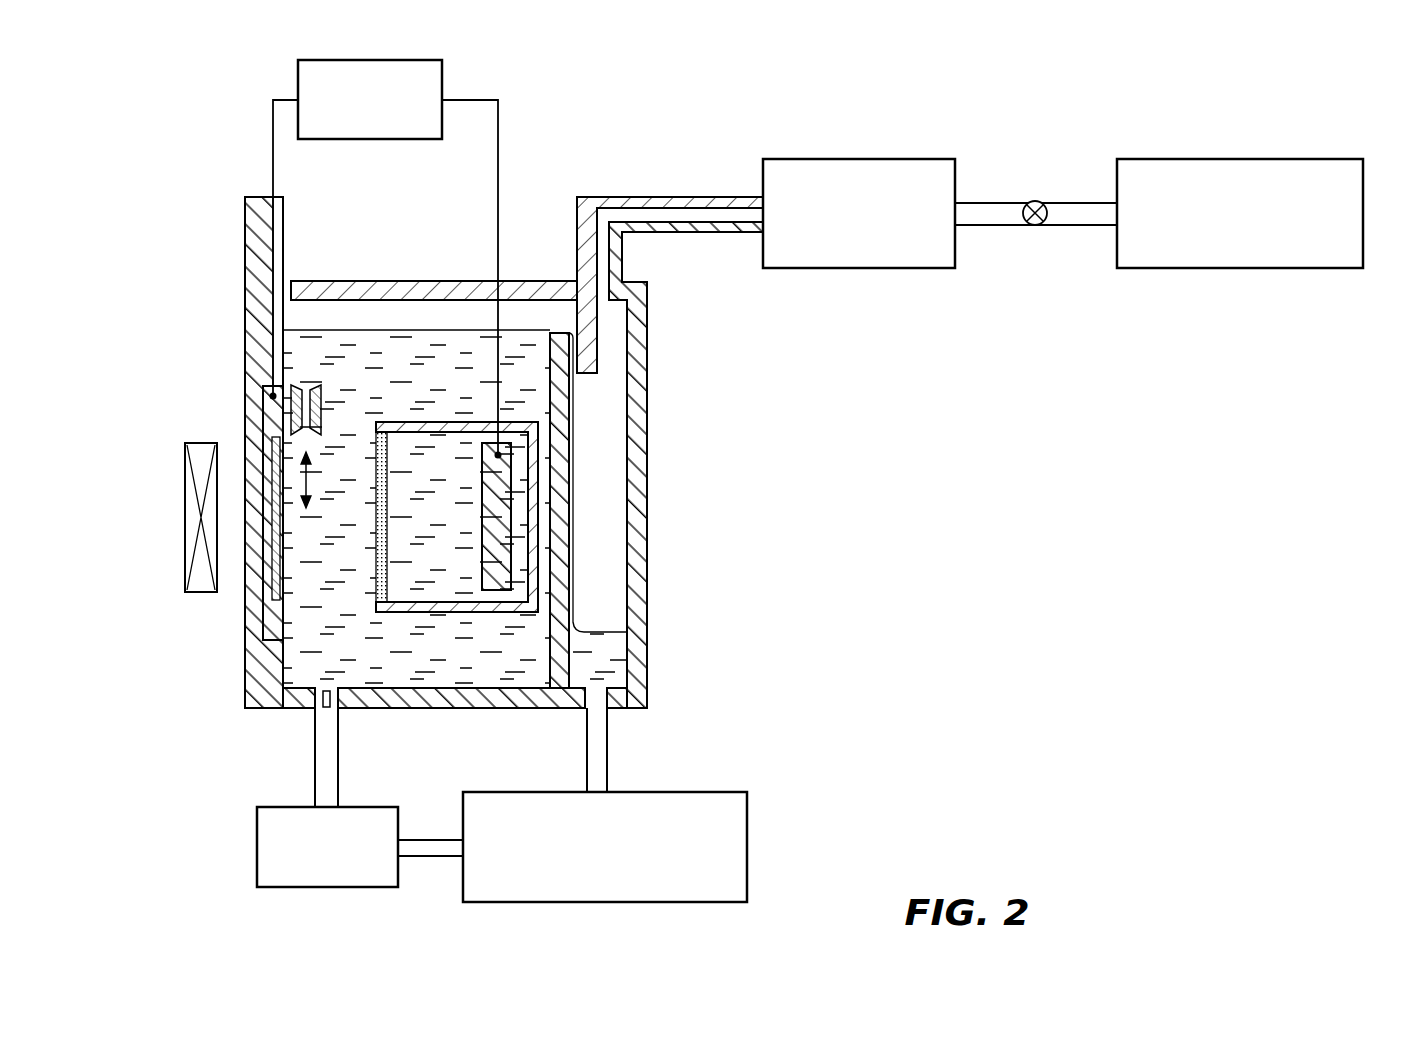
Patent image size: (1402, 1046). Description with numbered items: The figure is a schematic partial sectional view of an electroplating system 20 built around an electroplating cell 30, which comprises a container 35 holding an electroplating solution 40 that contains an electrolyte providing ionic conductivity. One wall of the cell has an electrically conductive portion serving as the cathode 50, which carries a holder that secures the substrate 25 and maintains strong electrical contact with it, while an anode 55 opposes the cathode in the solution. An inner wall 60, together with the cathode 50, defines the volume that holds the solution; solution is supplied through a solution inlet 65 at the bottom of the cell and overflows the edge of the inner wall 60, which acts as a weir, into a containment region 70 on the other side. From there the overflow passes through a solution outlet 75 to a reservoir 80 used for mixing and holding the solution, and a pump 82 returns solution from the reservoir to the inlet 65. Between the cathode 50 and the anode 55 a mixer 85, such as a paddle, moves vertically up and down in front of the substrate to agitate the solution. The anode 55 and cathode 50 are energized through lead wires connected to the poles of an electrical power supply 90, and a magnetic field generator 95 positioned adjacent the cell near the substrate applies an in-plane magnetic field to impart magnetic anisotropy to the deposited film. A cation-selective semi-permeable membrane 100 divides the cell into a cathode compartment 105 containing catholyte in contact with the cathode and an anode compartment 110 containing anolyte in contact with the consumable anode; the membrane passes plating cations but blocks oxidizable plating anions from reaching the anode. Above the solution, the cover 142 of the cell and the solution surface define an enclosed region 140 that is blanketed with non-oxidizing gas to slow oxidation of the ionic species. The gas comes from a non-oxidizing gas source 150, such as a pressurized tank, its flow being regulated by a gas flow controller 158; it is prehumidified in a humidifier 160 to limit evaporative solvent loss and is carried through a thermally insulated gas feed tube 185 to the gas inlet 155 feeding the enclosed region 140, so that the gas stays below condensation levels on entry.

The electroplating system 20 is at (1035, 112).
The substrate 25 is at (287, 597).
The electroplating cell 30 is at (528, 148).
The container 35 is at (368, 280).
The electroplating solution 40 is at (331, 580).
The cathode 50 is at (291, 428).
The anode 55 is at (540, 451).
The inner wall 60 is at (558, 543).
The solution inlet 65 is at (338, 733).
The containment region 70 is at (587, 426).
The solution outlet 75 is at (607, 733).
The reservoir 80 is at (747, 825).
The pump 82 is at (257, 823).
The mixer 85 is at (292, 406).
The electrical power supply 90 is at (298, 63).
The magnetic field generator 95 is at (185, 490).
The cation-selective semi-permeable membrane 100 is at (377, 510).
The cathode compartment 105 is at (551, 307).
The anode compartment 110 is at (552, 503).
The enclosed region 140 is at (293, 307).
The cover 142 is at (437, 290).
The non-oxidizing gas source 150 is at (1223, 158).
The gas inlet 155 is at (602, 246).
The gas flow controller 158 is at (1035, 226).
The humidifier 160 is at (858, 158).
The insulated gas feed tube 185 is at (640, 197).